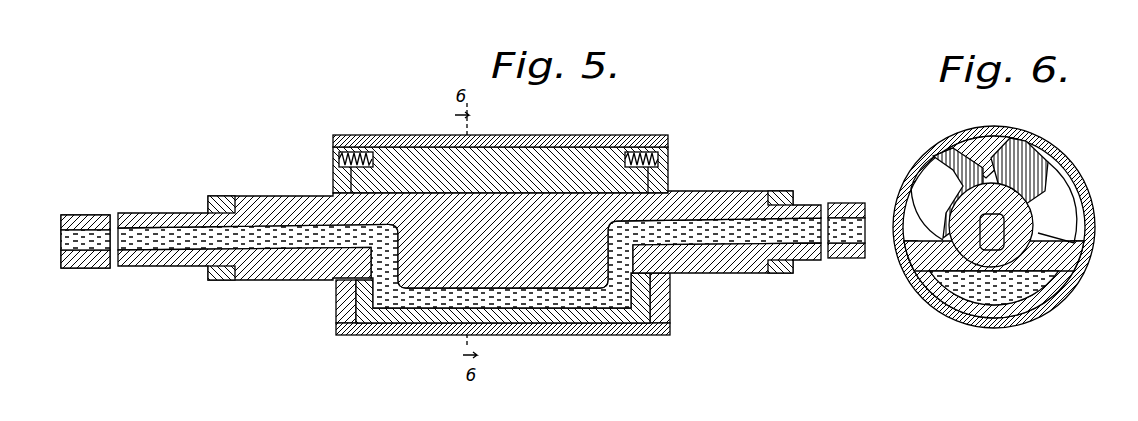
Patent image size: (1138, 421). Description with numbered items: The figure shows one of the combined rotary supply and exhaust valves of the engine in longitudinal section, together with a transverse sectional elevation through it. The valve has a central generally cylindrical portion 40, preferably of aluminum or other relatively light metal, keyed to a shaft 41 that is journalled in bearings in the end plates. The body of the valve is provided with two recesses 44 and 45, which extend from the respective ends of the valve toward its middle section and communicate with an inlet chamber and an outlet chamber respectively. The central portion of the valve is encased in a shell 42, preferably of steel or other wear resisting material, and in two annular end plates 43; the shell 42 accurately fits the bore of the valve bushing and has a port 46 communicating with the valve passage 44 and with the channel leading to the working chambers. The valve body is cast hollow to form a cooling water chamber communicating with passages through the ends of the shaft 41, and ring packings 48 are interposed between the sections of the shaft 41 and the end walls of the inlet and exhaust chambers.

In FIG. 5, the central generally cylindrical portion 40 is at (600, 127).
In FIG. 6, the central generally cylindrical portion 40 is at (945, 190).
In FIG. 5, the shaft 41 is at (730, 183).
In FIG. 6, the shaft 41 is at (1028, 209).
In FIG. 5, the shell 42 is at (537, 127).
In FIG. 6, the shell 42 is at (955, 313).
In FIG. 5, the annular end plates 43 is at (325, 176).
In FIG. 6, the recess 44 is at (935, 163).
In FIG. 6, the recess 45 is at (1040, 172).
In FIG. 5, the port 46 is at (548, 327).
In FIG. 5, the ring packings 48 is at (205, 188).